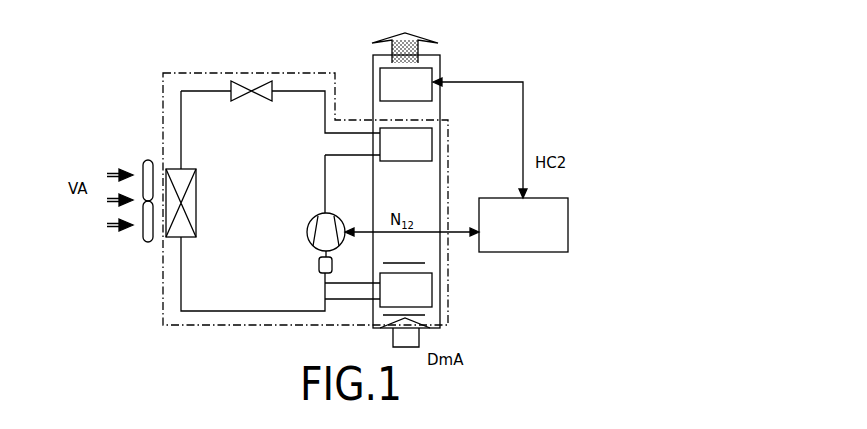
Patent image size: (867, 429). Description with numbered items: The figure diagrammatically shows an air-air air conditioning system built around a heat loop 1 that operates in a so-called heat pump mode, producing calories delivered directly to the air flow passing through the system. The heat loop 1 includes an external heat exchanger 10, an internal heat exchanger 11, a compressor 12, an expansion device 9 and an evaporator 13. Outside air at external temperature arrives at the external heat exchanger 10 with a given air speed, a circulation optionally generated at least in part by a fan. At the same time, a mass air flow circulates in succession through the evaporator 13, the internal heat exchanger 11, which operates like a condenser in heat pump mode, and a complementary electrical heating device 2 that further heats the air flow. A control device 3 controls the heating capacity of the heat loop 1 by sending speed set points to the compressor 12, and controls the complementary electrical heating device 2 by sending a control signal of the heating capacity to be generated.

The heat loop 1 is at (168, 118).
The expansion device 9 is at (250, 80).
The complementary electrical heating device 2 is at (392, 80).
The external heat exchanger 10 is at (187, 231).
The internal heat exchanger 11 is at (420, 143).
The compressor 12 is at (316, 237).
The evaporator 13 is at (420, 288).
The control device 3 is at (553, 226).